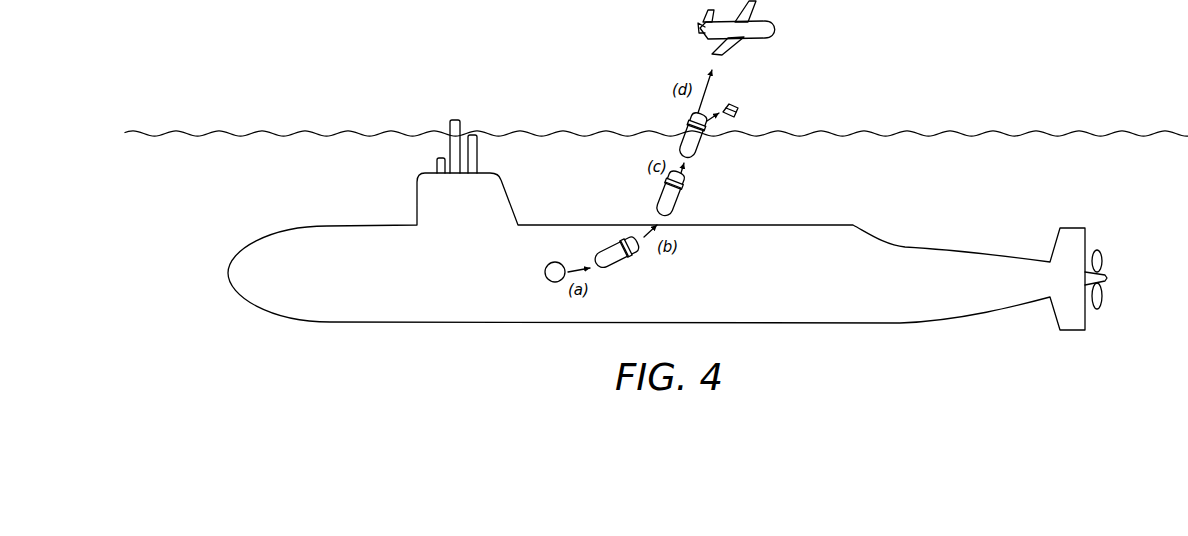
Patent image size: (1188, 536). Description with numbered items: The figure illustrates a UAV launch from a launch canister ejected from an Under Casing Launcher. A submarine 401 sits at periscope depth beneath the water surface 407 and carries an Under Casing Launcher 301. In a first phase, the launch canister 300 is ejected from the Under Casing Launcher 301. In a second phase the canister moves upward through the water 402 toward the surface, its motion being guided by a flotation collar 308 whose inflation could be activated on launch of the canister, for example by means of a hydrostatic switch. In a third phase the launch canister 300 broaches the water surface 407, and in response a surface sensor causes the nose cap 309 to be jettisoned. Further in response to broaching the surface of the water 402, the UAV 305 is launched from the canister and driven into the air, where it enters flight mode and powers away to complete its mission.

The launch canister 300 is at (617, 260).
The Under Casing Launcher 301 is at (544, 271).
The UAV 305 is at (776, 32).
The flotation collar 308 is at (683, 192).
The nose cap 309 is at (738, 108).
The submarine 401 is at (407, 323).
The water 402 is at (179, 174).
The water surface 407 is at (1005, 134).